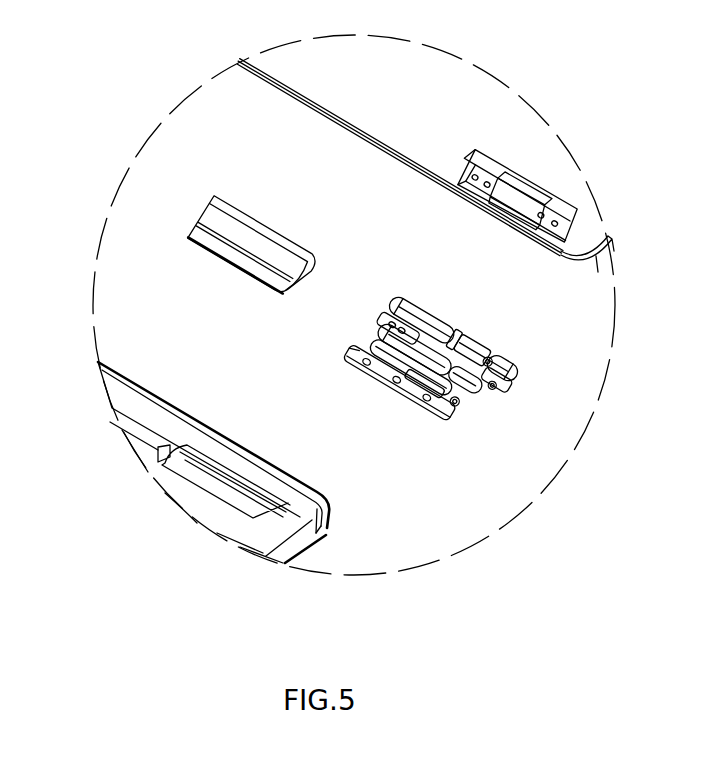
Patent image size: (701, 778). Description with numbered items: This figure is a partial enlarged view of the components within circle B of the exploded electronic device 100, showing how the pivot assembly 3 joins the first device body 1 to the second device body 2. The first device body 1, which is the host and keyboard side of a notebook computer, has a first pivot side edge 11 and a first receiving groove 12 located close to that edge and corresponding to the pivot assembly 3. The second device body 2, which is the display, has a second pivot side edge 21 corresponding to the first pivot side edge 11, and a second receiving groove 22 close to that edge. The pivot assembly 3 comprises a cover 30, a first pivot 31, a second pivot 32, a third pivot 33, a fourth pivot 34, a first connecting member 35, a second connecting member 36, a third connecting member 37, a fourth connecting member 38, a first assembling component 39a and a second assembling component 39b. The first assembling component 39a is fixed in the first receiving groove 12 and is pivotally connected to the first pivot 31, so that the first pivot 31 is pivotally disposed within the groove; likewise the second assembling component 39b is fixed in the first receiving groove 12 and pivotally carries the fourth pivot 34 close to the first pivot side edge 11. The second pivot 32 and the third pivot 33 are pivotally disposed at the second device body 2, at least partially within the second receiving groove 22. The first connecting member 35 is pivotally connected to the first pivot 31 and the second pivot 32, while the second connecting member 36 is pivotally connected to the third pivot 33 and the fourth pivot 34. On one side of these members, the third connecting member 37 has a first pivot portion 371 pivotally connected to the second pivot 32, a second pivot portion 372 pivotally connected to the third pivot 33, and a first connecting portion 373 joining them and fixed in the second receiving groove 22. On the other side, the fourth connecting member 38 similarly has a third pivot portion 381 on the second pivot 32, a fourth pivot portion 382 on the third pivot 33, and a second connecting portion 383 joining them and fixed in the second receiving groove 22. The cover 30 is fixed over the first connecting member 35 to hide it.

The electronic device 100 is at (193, 107).
The first device body 1 is at (278, 562).
The first pivot side edge 11 is at (330, 523).
The first receiving groove 12 is at (202, 482).
The second device body 2 is at (458, 61).
The second pivot side edge 21 is at (615, 265).
The second receiving groove 22 is at (525, 193).
The pivot assembly 3 is at (316, 210).
The cover 30 is at (205, 211).
The first pivot 31 is at (454, 406).
The second pivot 32 is at (492, 362).
The third pivot 33 is at (472, 396).
The fourth pivot 34 is at (497, 389).
The first connecting member 35 is at (417, 370).
The second connecting member 36 is at (440, 387).
The third connecting member 37 is at (578, 282).
The first pivot portion 371 is at (476, 355).
The second pivot portion 372 is at (501, 365).
The first connecting portion 373 is at (454, 340).
The fourth connecting member 38 is at (436, 231).
The third pivot portion 381 is at (402, 310).
The fourth pivot portion 382 is at (375, 330).
The second connecting portion 383 is at (398, 338).
The first assembling component 39a is at (347, 352).
The second assembling component 39b is at (499, 381).
The circle B is at (617, 345).